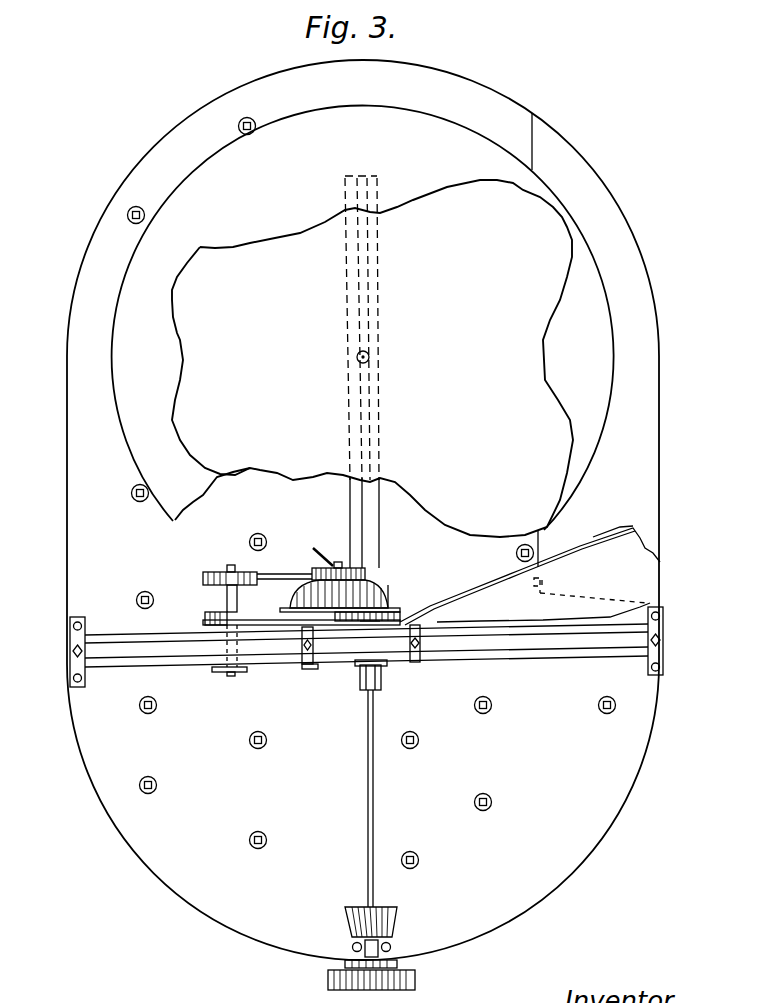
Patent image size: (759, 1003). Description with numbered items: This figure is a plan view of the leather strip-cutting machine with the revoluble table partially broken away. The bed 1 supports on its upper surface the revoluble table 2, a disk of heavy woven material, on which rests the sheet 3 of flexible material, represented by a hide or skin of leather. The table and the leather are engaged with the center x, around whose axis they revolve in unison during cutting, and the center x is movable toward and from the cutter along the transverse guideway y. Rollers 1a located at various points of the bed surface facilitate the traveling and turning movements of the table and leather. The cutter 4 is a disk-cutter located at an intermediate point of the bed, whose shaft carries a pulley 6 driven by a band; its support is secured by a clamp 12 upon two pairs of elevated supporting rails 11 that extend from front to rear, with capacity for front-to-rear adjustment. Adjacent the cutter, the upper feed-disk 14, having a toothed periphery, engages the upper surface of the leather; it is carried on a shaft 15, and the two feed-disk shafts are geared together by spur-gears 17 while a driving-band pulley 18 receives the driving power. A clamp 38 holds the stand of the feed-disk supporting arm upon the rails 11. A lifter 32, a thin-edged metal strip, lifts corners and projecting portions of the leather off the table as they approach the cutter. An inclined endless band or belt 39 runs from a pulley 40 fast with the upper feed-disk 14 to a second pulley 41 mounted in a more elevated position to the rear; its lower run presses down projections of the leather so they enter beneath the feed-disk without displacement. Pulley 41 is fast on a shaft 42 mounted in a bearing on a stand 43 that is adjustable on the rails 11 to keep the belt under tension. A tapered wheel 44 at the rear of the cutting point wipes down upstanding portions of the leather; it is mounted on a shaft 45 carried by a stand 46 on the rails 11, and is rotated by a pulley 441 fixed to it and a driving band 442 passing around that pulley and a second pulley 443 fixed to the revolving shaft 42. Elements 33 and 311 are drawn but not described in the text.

The bed 1 is at (213, 918).
The rollers 1a is at (238, 130).
The revoluble table 2 is at (593, 292).
The sheet 3 is at (203, 252).
The cutter 4 is at (372, 628).
The pulley 6 is at (355, 668).
The supporting rails 11 is at (124, 645).
The clamp 12 is at (418, 665).
The upper feed-disk 14 is at (384, 623).
The shaft 15 is at (366, 799).
The spur-gears 17 is at (400, 963).
The driving-band pulley 18 is at (416, 981).
The lifter 32 is at (326, 560).
The band 33 is at (412, 618).
The clamp 38 is at (300, 667).
The endless band or belt 39 is at (265, 617).
The pulley 40 is at (390, 580).
The second pulley 41 is at (206, 612).
The shaft 42 is at (203, 580).
The stand 43 is at (230, 674).
The tapered wheel 44 is at (300, 592).
The shaft 45 is at (345, 698).
The stand 46 is at (313, 665).
The guide 311 is at (593, 537).
The pulley 441 is at (348, 566).
The driving band 442 is at (268, 575).
The second pulley 443 is at (213, 572).
The center x is at (370, 353).
The guideway y is at (364, 504).